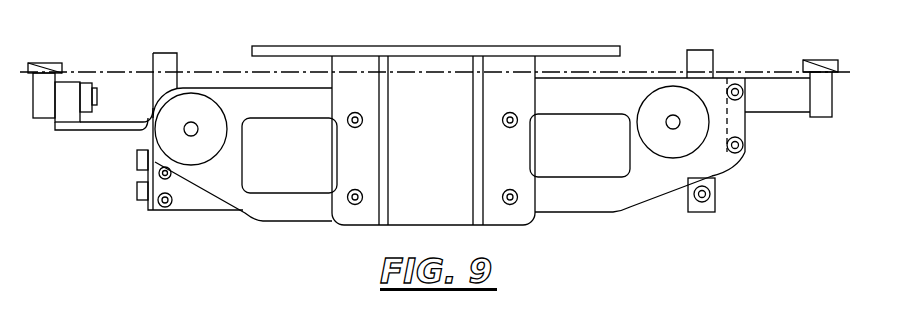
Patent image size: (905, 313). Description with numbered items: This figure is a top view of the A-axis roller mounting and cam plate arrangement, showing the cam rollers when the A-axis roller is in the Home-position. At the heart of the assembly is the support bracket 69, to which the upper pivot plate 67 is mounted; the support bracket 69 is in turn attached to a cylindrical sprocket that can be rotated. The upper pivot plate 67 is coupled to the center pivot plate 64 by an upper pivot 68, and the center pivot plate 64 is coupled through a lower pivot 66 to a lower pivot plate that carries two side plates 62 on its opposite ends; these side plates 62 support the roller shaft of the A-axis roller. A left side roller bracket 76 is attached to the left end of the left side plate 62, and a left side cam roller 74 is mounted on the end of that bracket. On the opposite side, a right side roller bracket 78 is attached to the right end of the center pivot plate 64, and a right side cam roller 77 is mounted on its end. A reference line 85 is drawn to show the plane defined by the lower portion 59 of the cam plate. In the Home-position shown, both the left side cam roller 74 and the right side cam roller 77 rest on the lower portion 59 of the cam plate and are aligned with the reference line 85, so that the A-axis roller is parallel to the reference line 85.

The lower portion of the cam plate 59 is at (835, 72).
The side plate 62 is at (165, 55).
The center pivot plate 64 is at (605, 202).
The lower pivot 66 is at (660, 112).
The upper pivot plate 67 is at (262, 208).
The upper pivot 68 is at (205, 118).
The support bracket 69 is at (447, 169).
The left side cam roller 74 is at (46, 111).
The left side roller bracket 76 is at (108, 131).
The right side cam roller 77 is at (822, 107).
The right side roller bracket 78 is at (700, 58).
The reference line 85 is at (663, 72).